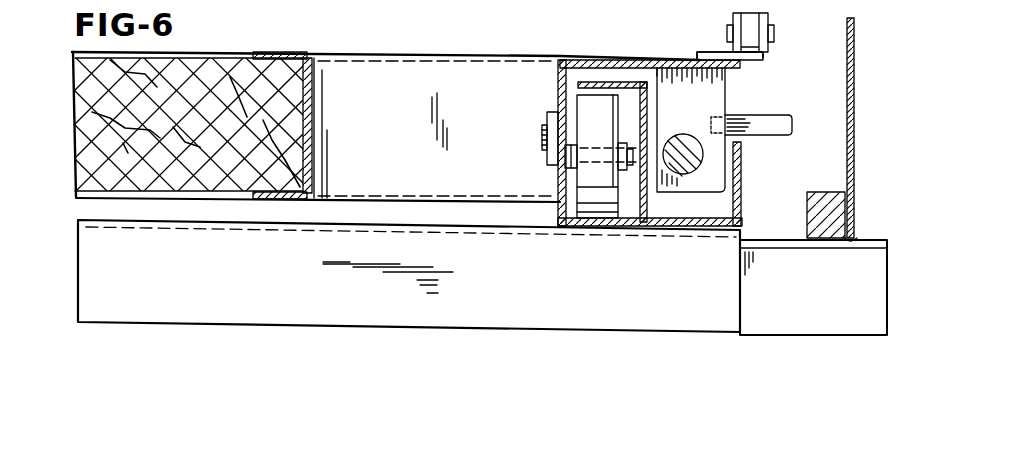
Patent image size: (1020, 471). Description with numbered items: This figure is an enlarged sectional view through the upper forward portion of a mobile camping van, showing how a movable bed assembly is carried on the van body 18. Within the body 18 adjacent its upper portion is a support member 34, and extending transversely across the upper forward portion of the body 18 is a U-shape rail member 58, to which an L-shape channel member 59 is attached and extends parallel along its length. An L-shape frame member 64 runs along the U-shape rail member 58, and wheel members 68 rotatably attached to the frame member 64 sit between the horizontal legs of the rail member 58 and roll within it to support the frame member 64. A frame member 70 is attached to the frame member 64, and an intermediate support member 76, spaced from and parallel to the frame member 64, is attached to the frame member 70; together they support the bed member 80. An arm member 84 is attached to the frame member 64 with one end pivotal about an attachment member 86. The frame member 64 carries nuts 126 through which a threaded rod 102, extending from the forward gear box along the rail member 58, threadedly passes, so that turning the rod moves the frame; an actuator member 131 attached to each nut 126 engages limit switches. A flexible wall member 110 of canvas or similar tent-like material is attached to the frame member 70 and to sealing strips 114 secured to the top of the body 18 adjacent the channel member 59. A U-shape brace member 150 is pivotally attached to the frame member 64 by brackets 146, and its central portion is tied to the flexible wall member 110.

The body 18 is at (852, 301).
The support member 34 is at (270, 297).
The U-shape rail member 58 is at (606, 82).
The L-shape channel member 59 is at (742, 193).
The L-shape frame member 64 is at (577, 60).
The wheel members 68 is at (602, 215).
The frame member 70 is at (411, 75).
The intermediate support member 76 is at (285, 53).
The bed member 80 is at (217, 68).
The arm member 84 is at (550, 157).
The attachment member 86 is at (545, 133).
The threaded rod 102 is at (703, 160).
The flexible wall member 110 is at (847, 30).
The sealing strips 114 is at (823, 192).
The nuts 126 is at (716, 98).
The actuator member 131 is at (782, 118).
The brackets 146 is at (765, 54).
The U-shape brace member 150 is at (733, 20).